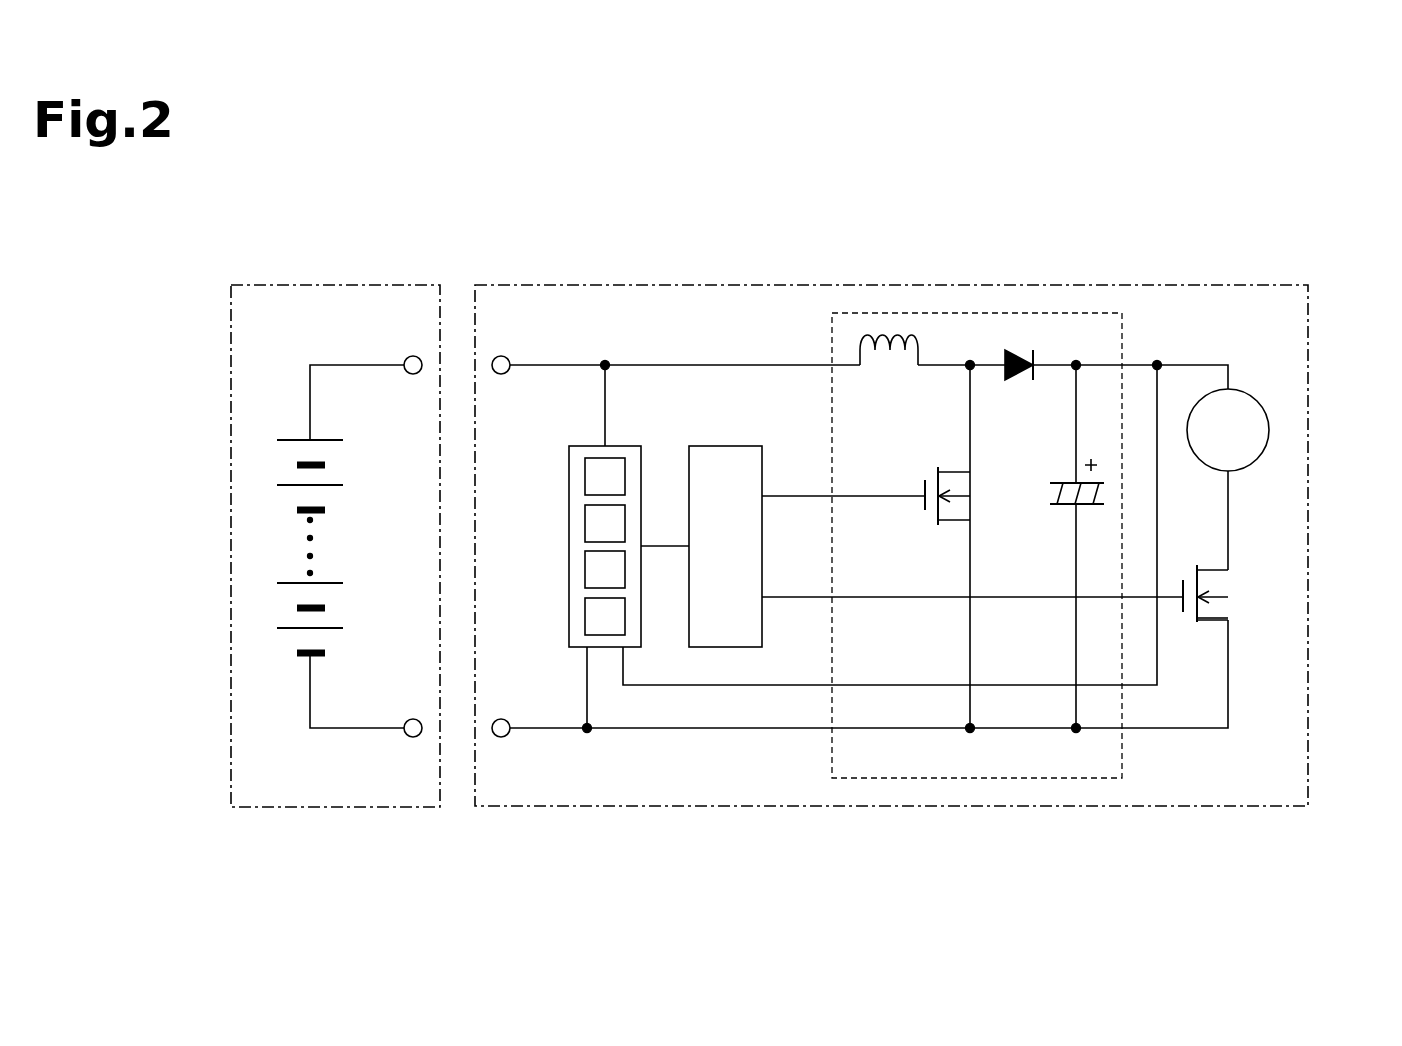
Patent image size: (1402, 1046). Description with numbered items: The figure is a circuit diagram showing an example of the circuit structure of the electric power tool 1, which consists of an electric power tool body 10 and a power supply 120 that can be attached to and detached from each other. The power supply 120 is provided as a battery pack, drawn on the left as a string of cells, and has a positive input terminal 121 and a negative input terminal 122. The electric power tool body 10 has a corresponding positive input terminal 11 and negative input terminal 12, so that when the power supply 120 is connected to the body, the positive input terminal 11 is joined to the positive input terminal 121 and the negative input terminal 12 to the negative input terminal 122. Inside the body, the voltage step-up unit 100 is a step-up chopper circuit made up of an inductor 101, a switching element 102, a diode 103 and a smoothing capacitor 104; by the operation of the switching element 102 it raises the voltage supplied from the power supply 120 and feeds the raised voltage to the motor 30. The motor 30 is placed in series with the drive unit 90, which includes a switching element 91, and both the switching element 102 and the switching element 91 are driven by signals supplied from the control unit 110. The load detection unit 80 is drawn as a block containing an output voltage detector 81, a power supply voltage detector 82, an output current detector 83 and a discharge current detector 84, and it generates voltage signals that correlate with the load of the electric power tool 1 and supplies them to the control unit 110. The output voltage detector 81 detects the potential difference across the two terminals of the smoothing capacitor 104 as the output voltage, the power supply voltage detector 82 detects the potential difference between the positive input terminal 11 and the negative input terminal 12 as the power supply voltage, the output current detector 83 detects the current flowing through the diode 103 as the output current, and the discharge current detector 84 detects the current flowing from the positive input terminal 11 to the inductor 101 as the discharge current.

The electric power tool 1 is at (157, 236).
The electric power tool body 10 is at (1283, 284).
The positive input terminal 11 is at (507, 358).
The negative input terminal 12 is at (507, 720).
The motor 30 is at (1260, 402).
The load detection unit 80 is at (623, 525).
The output voltage detector 81 is at (605, 476).
The power supply voltage detector 82 is at (605, 523).
The output current detector 83 is at (605, 569).
The discharge current detector 84 is at (605, 616).
The drive unit 90 is at (1240, 626).
The switching element 91 is at (1196, 623).
The voltage step-up unit 100 is at (1123, 318).
The inductor 101 is at (917, 346).
The switching element 102 is at (936, 472).
The diode 103 is at (1038, 356).
The smoothing capacitor 104 is at (1054, 506).
The control unit 110 is at (741, 445).
The power supply 120 is at (231, 322).
The positive input terminal 121 is at (406, 359).
The negative input terminal 122 is at (406, 722).